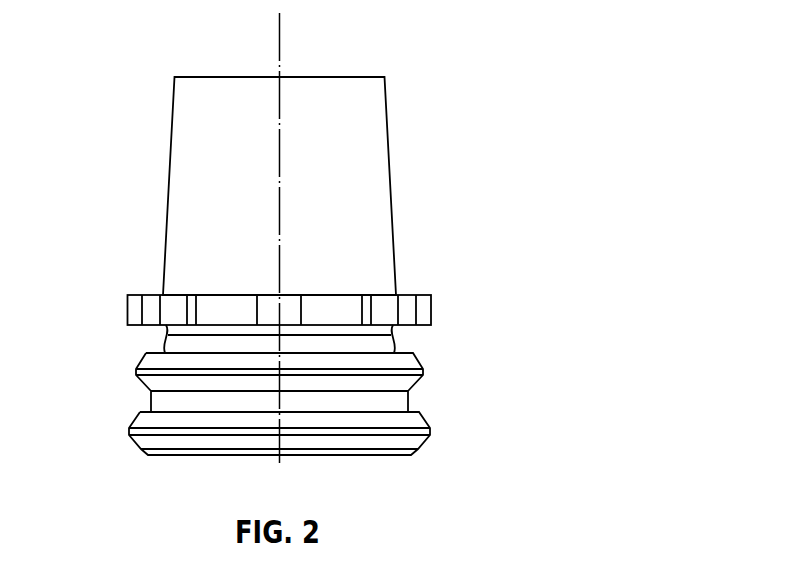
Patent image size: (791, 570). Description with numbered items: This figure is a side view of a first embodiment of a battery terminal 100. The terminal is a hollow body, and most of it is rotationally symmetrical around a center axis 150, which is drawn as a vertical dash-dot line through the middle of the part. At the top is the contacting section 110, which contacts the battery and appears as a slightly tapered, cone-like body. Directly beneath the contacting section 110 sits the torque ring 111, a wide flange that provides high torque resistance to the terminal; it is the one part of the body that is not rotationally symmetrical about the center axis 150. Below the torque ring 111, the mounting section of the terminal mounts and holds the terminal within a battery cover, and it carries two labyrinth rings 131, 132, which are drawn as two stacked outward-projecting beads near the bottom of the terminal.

The battery terminal 100 is at (417, 72).
The contacting section 110 is at (390, 183).
The torque ring 111 is at (280, 310).
The labyrinth ring 131 is at (137, 370).
The labyrinth ring 132 is at (128, 430).
The center axis 150 is at (279, 30).